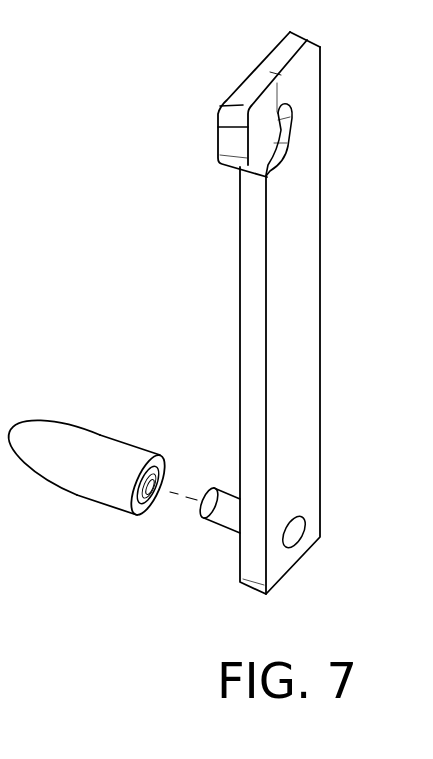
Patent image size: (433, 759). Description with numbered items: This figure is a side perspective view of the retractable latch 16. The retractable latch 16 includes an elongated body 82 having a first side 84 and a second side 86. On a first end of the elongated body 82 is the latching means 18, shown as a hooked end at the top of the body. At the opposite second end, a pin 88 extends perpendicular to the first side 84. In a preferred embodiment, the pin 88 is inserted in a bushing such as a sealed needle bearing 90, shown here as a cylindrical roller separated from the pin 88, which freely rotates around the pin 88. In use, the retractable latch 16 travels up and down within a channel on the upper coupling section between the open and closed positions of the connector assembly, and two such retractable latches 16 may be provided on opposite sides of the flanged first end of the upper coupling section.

The retractable latch 16 is at (122, 249).
The latching means 18 is at (217, 140).
The elongated body 82 is at (320, 289).
The first side 84 is at (240, 375).
The second side 86 is at (308, 428).
The pin 88 is at (210, 538).
The sealed needle bearing 90 is at (92, 467).